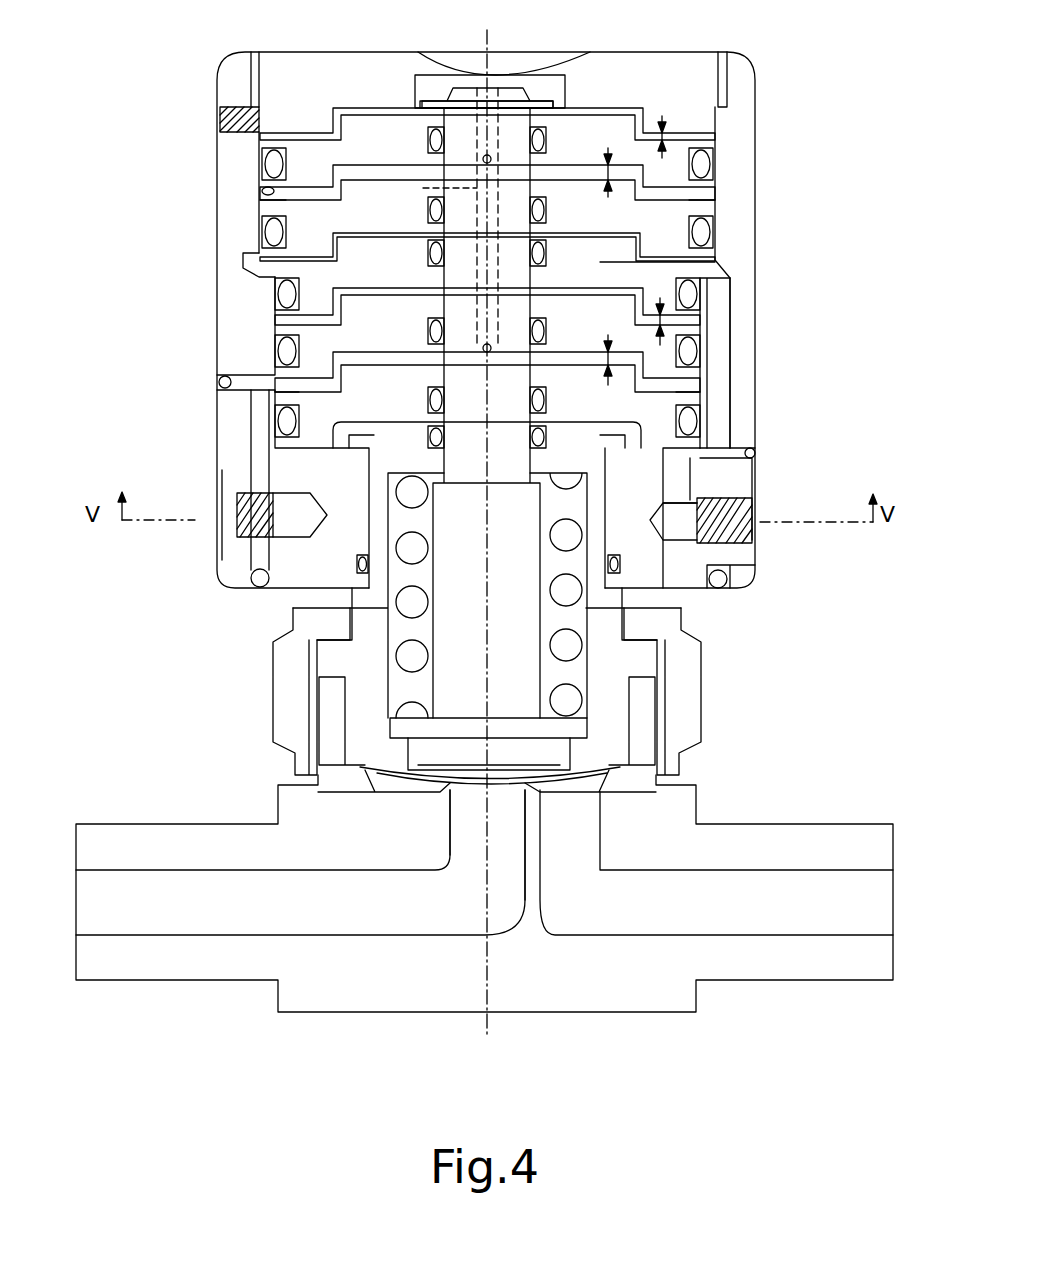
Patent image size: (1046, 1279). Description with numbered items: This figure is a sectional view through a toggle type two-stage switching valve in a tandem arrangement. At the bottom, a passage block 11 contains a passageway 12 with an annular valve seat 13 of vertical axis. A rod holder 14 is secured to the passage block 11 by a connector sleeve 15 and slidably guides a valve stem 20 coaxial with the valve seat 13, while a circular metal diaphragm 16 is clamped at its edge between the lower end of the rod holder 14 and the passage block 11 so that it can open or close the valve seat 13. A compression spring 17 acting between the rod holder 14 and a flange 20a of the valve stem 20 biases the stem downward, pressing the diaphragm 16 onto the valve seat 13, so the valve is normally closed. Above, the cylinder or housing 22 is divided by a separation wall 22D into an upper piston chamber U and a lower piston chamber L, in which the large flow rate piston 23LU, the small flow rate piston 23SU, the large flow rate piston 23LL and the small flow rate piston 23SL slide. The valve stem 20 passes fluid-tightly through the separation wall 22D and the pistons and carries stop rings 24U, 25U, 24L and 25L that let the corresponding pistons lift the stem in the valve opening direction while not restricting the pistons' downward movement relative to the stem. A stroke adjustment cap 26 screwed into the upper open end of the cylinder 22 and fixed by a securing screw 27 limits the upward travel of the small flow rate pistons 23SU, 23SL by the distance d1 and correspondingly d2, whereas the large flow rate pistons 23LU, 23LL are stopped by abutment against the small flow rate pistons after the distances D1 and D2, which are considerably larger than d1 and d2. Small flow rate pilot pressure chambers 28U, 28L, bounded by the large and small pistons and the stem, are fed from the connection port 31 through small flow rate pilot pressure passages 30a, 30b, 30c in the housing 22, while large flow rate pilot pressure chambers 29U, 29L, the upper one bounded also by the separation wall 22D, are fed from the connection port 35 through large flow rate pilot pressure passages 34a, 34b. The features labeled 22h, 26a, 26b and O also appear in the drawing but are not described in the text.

The passage block 11 is at (767, 965).
The passageway 12 is at (238, 915).
The annular valve seat 13 is at (462, 787).
The rod holder 14 is at (362, 597).
The connector sleeve 15 is at (282, 703).
The circular metal diaphragm 16 is at (503, 787).
The compression spring 17 is at (388, 662).
The valve stem 20 is at (523, 560).
The flange 20a is at (408, 728).
The cylinder 22 is at (752, 72).
The separation wall 22D is at (645, 266).
The housing hole 22h is at (709, 390).
The small flow rate piston 23SU is at (690, 146).
The large flow rate piston 23LU is at (675, 228).
The small flow rate piston 23SL is at (673, 357).
The large flow rate piston 23LL is at (673, 422).
The stop ring 24U is at (543, 181).
The stop ring 24L is at (430, 365).
The stop ring 25U is at (547, 104).
The stop ring 25L is at (430, 297).
The stroke adjustment cap 26 is at (588, 60).
The cap projection 26a is at (483, 72).
The cap curved surface 26b is at (538, 62).
The securing screw 27 is at (222, 118).
The small flow rate pilot pressure chamber 28U is at (703, 200).
The small flow rate pilot pressure chamber 28L is at (679, 371).
The large flow rate pilot pressure chamber 29U is at (636, 252).
The large flow rate pilot pressure chamber 29L is at (630, 448).
The small flow rate pilot pressure passage 30a is at (263, 441).
The small flow rate pilot pressure passage 30b is at (422, 193).
The small flow rate pilot pressure passage 30c is at (483, 160).
The small flow rate pilot pressure connection port 31 is at (237, 523).
The large flow rate pilot pressure passage 34a is at (723, 297).
The large flow rate pilot pressure passage 34b is at (681, 485).
The large flow rate pilot pressure connection port 35 is at (743, 513).
The O-ring O is at (430, 141).
The upper piston chamber U is at (262, 191).
The lower piston chamber L is at (283, 333).
The distance d1 is at (679, 119).
The distance D1 is at (591, 164).
The distance d2 is at (657, 307).
The distance D2 is at (587, 343).